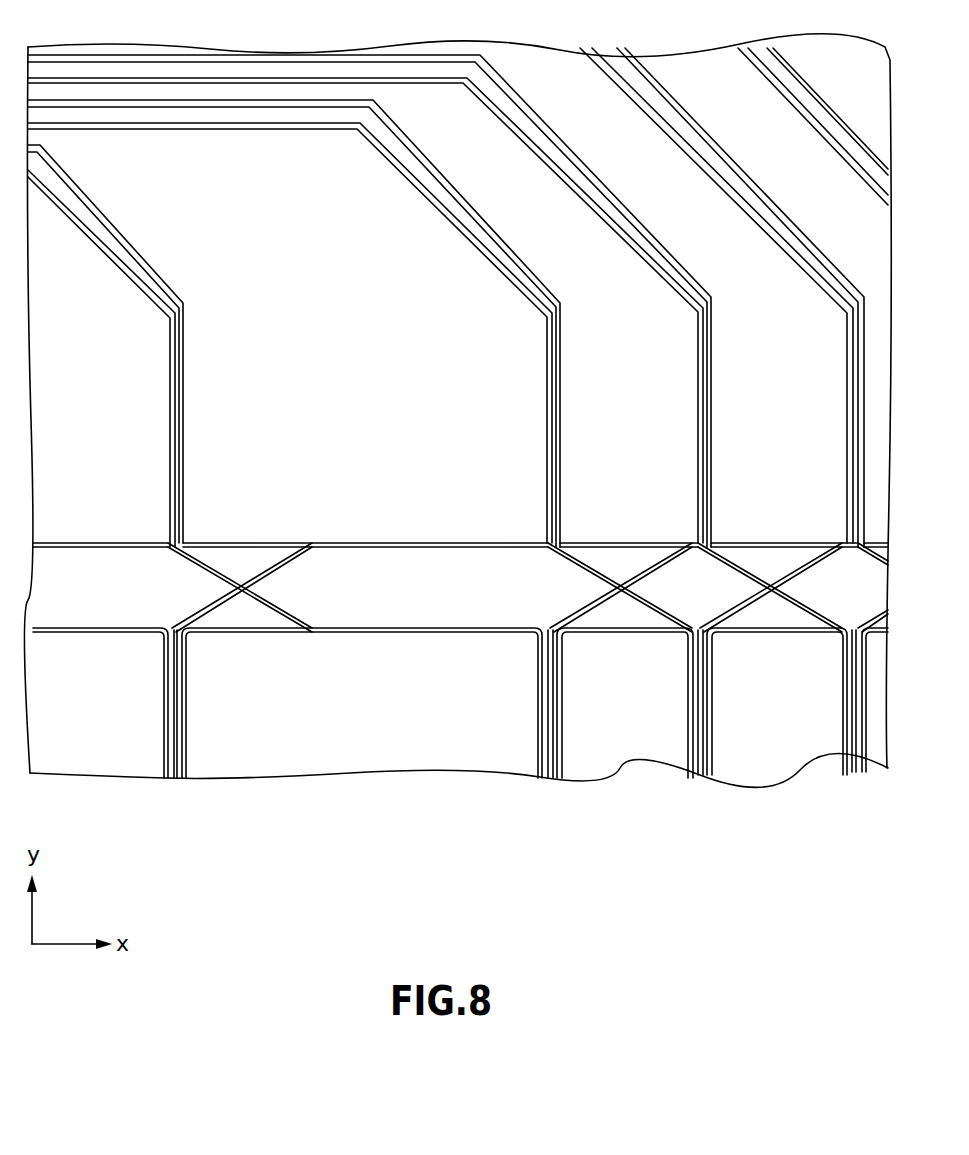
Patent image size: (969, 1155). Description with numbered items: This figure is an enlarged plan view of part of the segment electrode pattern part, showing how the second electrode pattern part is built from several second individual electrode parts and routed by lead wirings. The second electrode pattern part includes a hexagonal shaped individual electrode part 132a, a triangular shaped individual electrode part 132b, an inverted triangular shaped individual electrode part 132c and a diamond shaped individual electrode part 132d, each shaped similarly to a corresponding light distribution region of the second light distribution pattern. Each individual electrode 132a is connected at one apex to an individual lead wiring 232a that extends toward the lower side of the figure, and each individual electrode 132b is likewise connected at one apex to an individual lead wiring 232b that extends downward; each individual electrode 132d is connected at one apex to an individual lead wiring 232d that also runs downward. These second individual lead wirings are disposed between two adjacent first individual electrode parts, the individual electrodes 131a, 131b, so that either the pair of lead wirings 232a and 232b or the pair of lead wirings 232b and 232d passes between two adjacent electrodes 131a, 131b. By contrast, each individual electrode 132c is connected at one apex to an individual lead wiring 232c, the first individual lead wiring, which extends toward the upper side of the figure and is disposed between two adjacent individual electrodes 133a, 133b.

The individual electrode 131a is at (77, 753).
The individual electrode 131b is at (614, 768).
The hexagonal shaped individual electrode part 132a is at (108, 553).
The triangular shaped individual electrode part 132b is at (272, 620).
The inverted triangular shaped individual electrode part 132c is at (268, 553).
The diamond shaped individual electrode part 132d is at (745, 572).
The individual electrode 133a is at (193, 368).
The individual electrode 133b is at (755, 380).
The individual lead wiring 232a is at (164, 705).
The individual lead wiring 232b is at (186, 742).
The individual lead wiring 232c is at (180, 425).
The individual lead wiring 232d is at (695, 707).